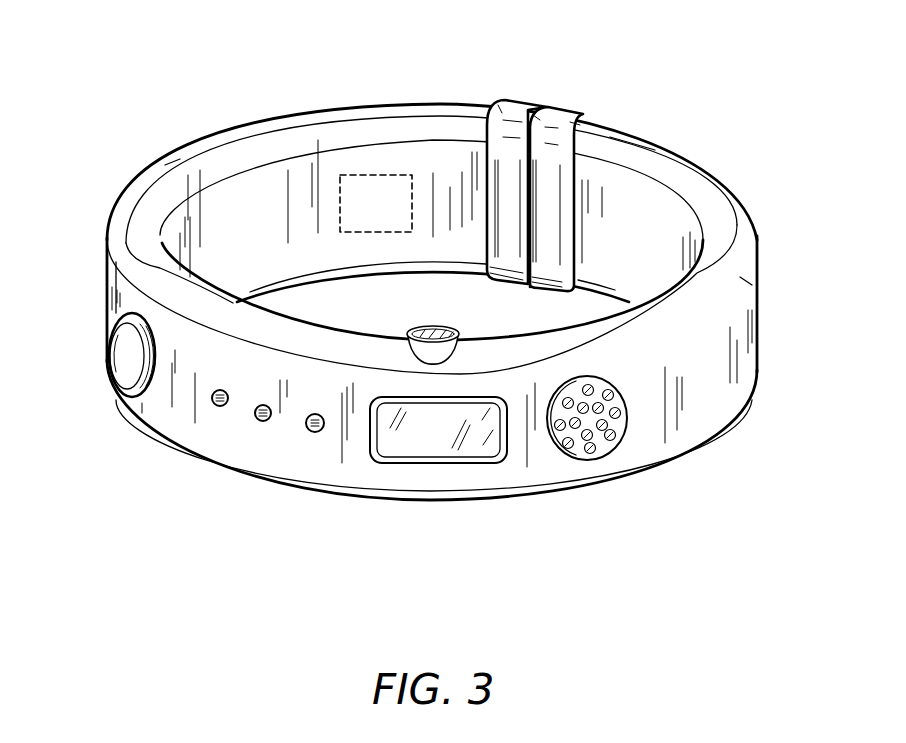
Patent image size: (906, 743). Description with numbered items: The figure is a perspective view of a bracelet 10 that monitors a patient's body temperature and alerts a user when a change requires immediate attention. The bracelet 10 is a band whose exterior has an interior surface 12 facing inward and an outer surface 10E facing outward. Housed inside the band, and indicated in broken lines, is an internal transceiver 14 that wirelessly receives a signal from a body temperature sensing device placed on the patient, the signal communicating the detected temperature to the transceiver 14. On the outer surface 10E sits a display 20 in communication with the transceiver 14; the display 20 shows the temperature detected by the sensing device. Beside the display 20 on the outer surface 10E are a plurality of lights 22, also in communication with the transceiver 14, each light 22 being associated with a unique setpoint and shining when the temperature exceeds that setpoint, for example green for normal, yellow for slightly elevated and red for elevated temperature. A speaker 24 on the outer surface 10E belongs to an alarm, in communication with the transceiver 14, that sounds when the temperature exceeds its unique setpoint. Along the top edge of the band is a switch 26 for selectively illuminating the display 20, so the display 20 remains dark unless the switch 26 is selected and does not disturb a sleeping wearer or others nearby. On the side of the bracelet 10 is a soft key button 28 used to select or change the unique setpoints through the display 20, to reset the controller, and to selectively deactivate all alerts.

The bracelet 10 is at (414, 306).
The outer surface 10E is at (200, 430).
The interior surface 12 is at (650, 207).
The internal transceiver 14 is at (390, 178).
The display 20 is at (467, 445).
The lights 22 is at (222, 406).
The speaker 24 is at (597, 445).
The switch 26 is at (433, 326).
The soft key button 28 is at (123, 347).